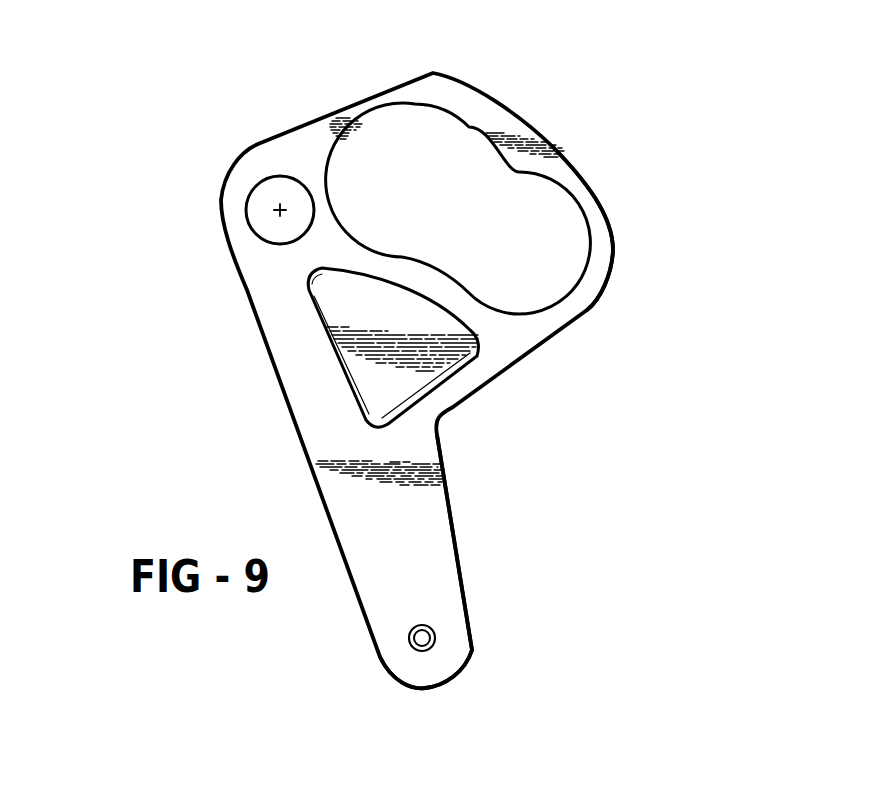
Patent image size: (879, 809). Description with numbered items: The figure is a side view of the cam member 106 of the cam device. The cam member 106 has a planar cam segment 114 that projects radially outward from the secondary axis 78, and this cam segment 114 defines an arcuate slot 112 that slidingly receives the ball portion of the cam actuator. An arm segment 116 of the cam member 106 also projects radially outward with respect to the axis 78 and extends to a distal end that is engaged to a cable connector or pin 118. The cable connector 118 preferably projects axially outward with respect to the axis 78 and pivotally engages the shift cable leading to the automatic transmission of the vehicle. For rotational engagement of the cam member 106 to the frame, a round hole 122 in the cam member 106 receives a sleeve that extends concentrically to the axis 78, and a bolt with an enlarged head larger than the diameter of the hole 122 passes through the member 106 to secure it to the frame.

The secondary axis 78 is at (279, 209).
The cam member 106 is at (573, 111).
The arcuate slot 112 is at (472, 186).
The planar cam segment 114 is at (603, 243).
The arm segment 116 is at (443, 592).
The cable connector 118 is at (472, 651).
The round hole 122 is at (268, 227).